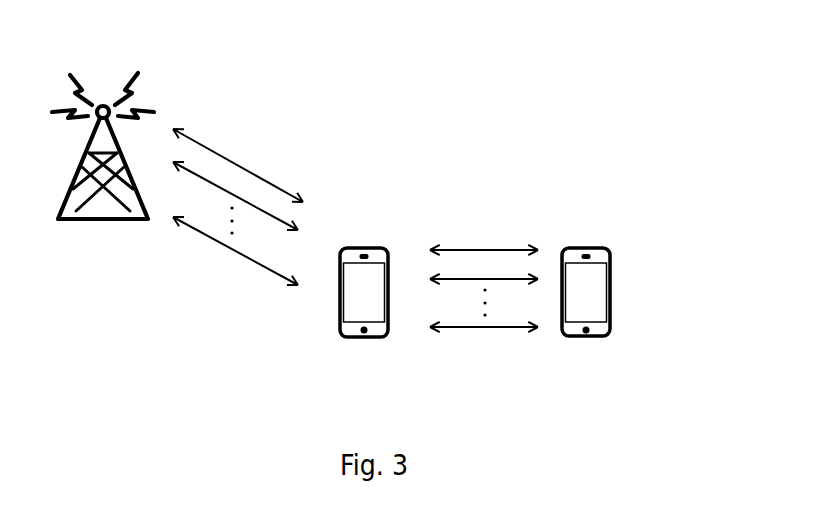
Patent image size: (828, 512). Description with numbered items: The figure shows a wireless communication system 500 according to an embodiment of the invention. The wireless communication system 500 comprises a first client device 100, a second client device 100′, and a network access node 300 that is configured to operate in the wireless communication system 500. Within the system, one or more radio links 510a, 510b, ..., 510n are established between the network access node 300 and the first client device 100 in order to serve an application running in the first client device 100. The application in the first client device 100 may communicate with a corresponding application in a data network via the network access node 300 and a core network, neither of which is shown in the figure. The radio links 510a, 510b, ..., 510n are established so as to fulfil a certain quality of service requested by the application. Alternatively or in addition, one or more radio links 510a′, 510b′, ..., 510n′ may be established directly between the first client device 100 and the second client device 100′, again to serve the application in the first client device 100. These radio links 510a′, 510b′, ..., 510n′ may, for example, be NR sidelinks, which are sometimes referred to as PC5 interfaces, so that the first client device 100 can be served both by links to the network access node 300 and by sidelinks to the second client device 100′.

The wireless communication system 500 is at (571, 40).
The network access node 300 is at (97, 221).
The first client device 100 is at (353, 337).
The second client device 100′ is at (573, 336).
The radio link 510a is at (238, 155).
The radio link 510b is at (284, 169).
The radio link 510n is at (322, 196).
The radio link 510a′ is at (465, 226).
The radio link 510b′ is at (515, 241).
The radio link 510n′ is at (557, 265).